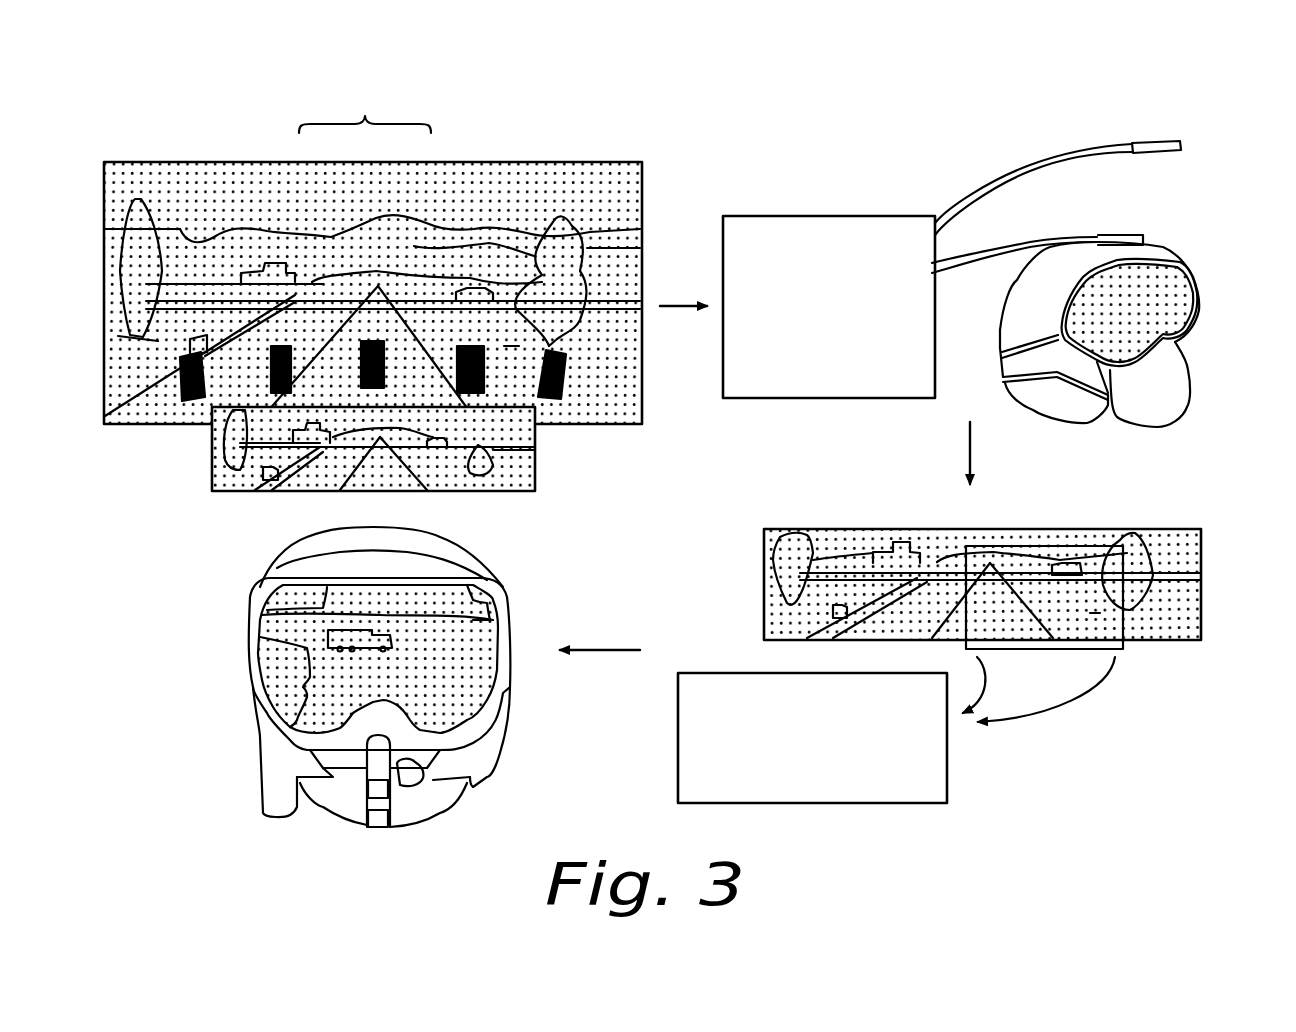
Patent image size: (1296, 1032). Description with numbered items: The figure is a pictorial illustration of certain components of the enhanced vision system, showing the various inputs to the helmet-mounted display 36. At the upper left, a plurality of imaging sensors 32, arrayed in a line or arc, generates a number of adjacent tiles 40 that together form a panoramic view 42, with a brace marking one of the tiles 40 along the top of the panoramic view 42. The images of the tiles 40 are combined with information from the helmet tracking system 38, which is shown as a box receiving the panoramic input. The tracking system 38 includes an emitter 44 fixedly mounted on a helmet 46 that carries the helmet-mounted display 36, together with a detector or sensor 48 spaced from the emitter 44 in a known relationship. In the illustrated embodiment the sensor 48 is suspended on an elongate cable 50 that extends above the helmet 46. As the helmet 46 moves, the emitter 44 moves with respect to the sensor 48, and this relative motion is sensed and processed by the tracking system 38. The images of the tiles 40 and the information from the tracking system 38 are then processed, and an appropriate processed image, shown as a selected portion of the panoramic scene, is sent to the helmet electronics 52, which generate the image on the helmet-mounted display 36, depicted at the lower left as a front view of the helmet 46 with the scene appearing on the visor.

The imaging sensors 32 is at (184, 392).
The helmet-mounted display 36 is at (1167, 304).
The helmet tracking system 38 is at (790, 206).
The tiles 40 is at (365, 100).
The panoramic view 42 is at (619, 156).
The emitter 44 is at (1137, 232).
The helmet 46 is at (1157, 254).
The sensor 48 is at (1158, 140).
The elongate cable 50 is at (1028, 164).
The helmet electronics 52 is at (947, 740).